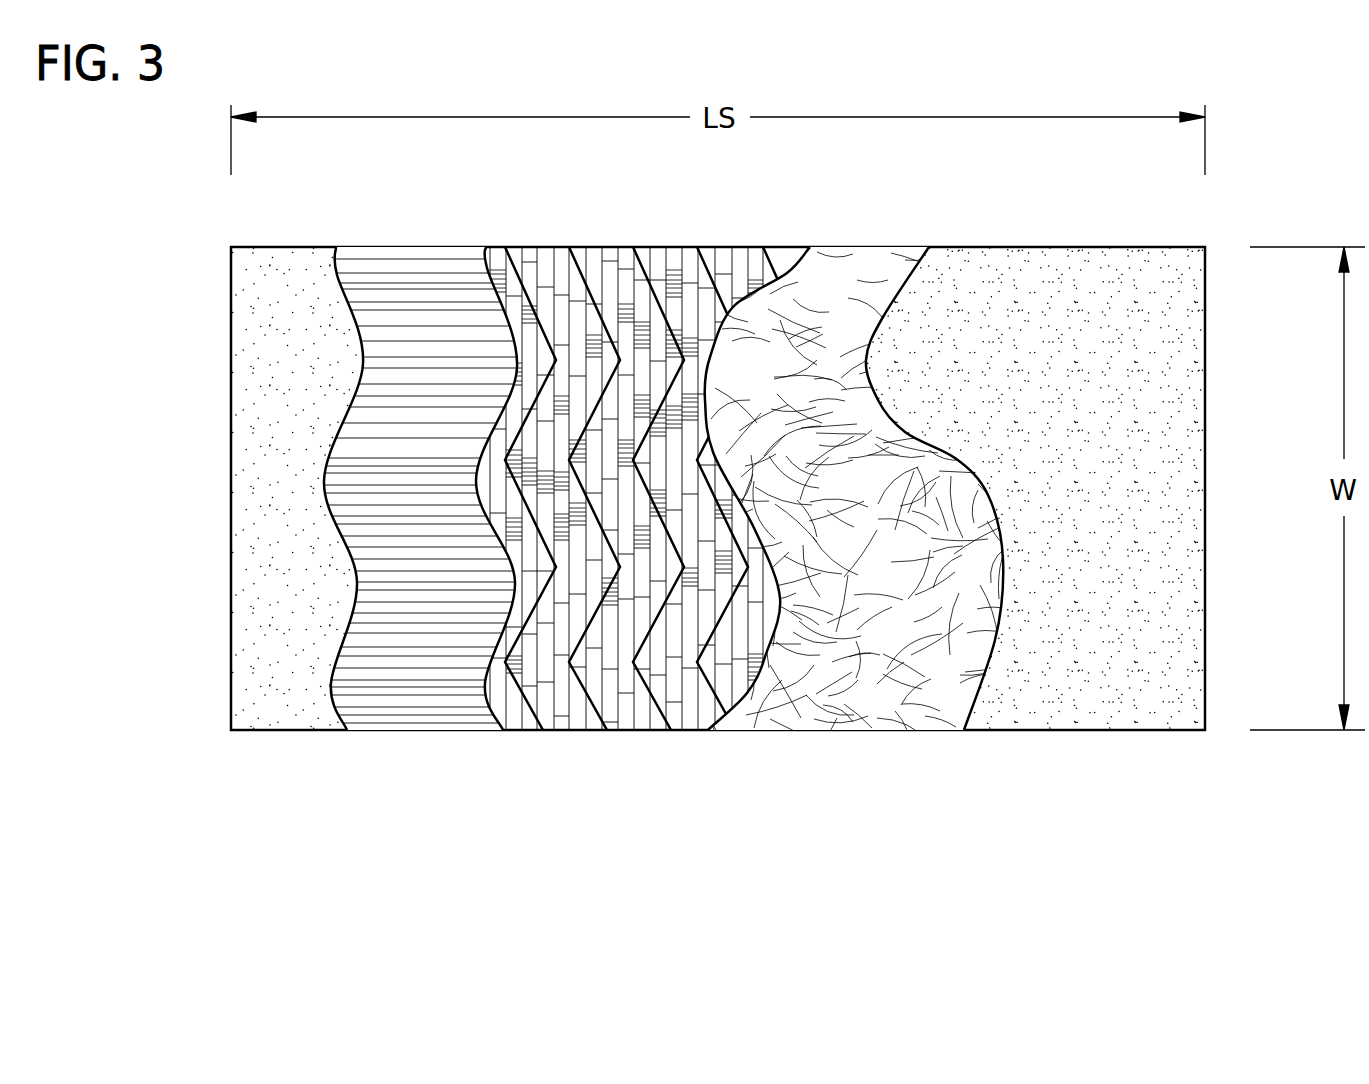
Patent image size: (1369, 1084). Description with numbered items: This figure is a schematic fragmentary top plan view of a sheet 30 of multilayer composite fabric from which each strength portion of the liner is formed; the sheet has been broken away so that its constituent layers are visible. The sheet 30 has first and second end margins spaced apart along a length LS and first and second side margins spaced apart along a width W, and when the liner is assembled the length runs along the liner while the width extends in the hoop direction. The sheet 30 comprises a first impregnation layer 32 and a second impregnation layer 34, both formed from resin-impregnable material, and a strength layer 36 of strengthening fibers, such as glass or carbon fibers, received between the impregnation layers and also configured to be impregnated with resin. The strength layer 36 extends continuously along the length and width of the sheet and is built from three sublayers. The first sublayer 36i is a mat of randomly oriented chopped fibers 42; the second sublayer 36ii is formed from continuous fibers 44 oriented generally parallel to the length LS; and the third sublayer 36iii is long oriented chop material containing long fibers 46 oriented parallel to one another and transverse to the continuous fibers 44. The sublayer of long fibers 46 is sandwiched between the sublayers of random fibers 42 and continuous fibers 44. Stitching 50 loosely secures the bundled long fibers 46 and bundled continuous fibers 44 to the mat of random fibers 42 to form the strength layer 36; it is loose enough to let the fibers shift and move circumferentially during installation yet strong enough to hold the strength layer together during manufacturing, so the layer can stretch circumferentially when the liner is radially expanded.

The sheet 30 is at (291, 866).
The first impregnation layer 32 is at (965, 765).
The second impregnation layer 34 is at (231, 765).
The strength layer 36 is at (678, 535).
The first sublayer 36i is at (867, 494).
The second sublayer 36ii is at (420, 526).
The third sublayer 36iii is at (652, 497).
The randomly oriented chopped fibers 42 is at (852, 275).
The continuous fibers 44 is at (405, 650).
The long fibers 46 is at (558, 267).
The stitching 50 is at (597, 290).